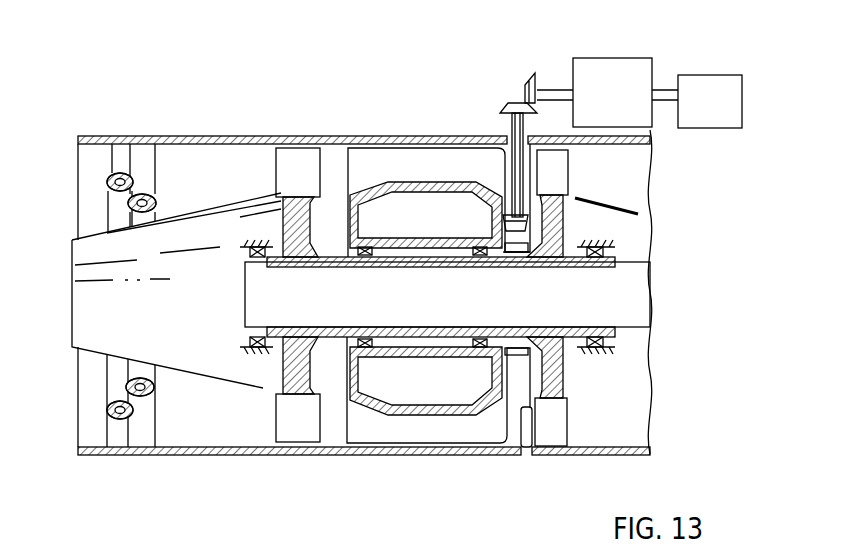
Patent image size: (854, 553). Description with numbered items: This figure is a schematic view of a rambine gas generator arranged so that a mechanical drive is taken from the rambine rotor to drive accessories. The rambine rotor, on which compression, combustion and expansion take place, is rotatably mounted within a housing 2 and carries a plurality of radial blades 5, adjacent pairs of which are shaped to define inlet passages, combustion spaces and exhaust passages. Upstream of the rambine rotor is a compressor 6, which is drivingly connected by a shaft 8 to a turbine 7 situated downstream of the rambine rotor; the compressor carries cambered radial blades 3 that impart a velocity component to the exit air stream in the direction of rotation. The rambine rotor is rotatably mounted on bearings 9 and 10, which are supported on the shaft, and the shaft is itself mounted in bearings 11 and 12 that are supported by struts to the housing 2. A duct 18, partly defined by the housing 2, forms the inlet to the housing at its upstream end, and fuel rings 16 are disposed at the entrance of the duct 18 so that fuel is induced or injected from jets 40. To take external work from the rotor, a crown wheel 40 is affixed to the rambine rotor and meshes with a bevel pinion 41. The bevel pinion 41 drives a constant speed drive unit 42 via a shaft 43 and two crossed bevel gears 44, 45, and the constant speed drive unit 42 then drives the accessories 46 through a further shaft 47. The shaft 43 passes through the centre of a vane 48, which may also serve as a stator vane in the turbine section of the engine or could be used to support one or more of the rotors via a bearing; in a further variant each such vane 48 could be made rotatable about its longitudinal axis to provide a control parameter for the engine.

The housing 2 is at (143, 455).
The radial blades 3 is at (298, 165).
The radial blades 5 is at (393, 167).
The compressor 6 is at (314, 215).
The turbine 7 is at (514, 318).
The shaft 8 is at (600, 300).
The bearing 9 is at (355, 345).
The bearing 10 is at (457, 355).
The bearing 11 is at (248, 252).
The bearing 12 is at (606, 257).
The fuel rings 16 is at (105, 397).
The duct 18 is at (212, 207).
The crown wheel 40 is at (157, 392).
The bevel pinion 41 is at (568, 230).
The constant speed drive unit 42 is at (601, 58).
The shaft 43 is at (512, 128).
The crossed bevel gear 44 is at (512, 104).
The crossed bevel gear 45 is at (537, 80).
The accessories 46 is at (697, 75).
The shaft 47 is at (662, 100).
The vane 48 is at (528, 170).